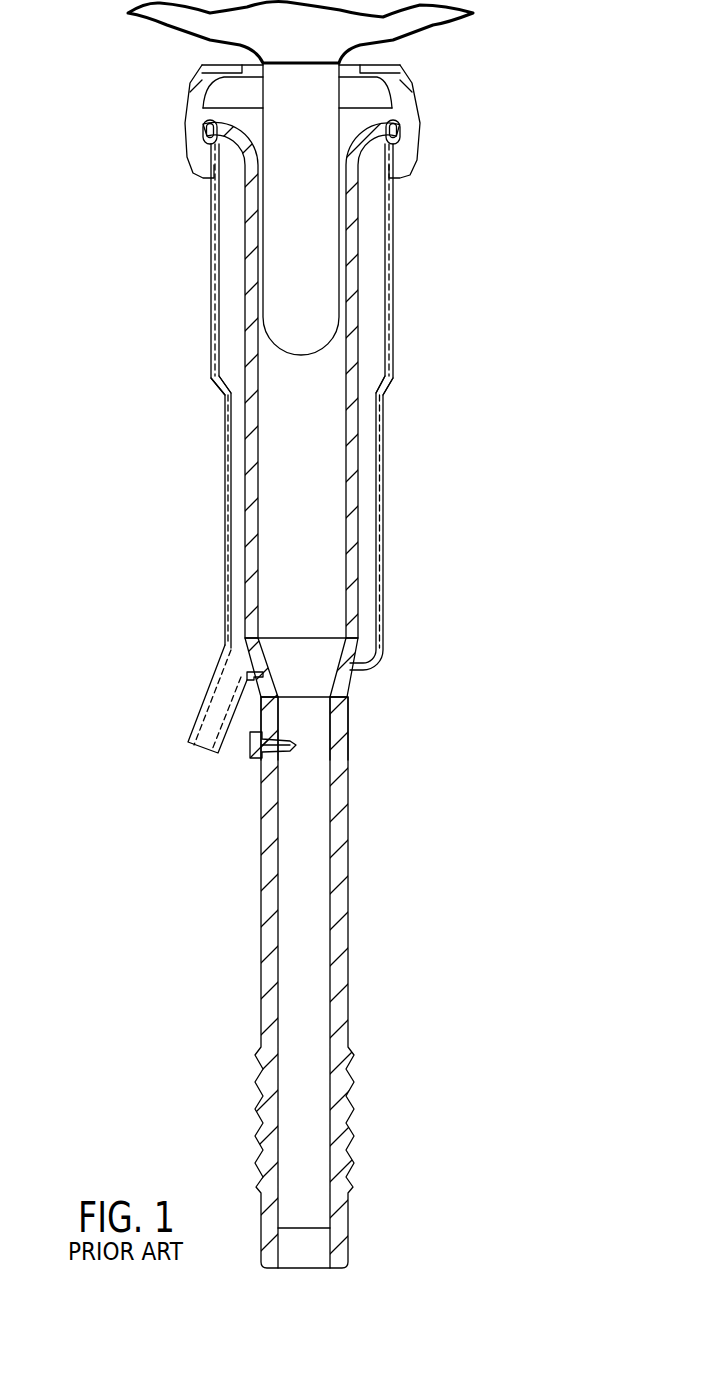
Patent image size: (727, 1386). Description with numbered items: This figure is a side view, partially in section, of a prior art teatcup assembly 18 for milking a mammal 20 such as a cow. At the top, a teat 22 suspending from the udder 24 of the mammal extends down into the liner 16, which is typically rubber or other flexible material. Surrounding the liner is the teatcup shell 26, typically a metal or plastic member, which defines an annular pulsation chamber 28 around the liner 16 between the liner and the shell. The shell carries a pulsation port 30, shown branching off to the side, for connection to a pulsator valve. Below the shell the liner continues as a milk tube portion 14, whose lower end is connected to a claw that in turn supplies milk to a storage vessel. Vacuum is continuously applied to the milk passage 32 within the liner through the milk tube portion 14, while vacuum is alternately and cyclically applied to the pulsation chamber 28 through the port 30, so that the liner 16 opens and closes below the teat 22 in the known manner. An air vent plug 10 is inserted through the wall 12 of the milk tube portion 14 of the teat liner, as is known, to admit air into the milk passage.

The air vent plug 10 is at (258, 758).
The wall 12 is at (342, 877).
The milk tube portion 14 is at (350, 737).
The liner 16 is at (358, 514).
The teatcup assembly 18 is at (470, 216).
The mammal 20 is at (172, 20).
The teat 22 is at (288, 266).
The udder 24 is at (183, 35).
The teatcup shell 26 is at (263, 395).
The pulsation chamber 28 is at (231, 368).
The pulsation port 30 is at (207, 685).
The milk passage 32 is at (318, 675).